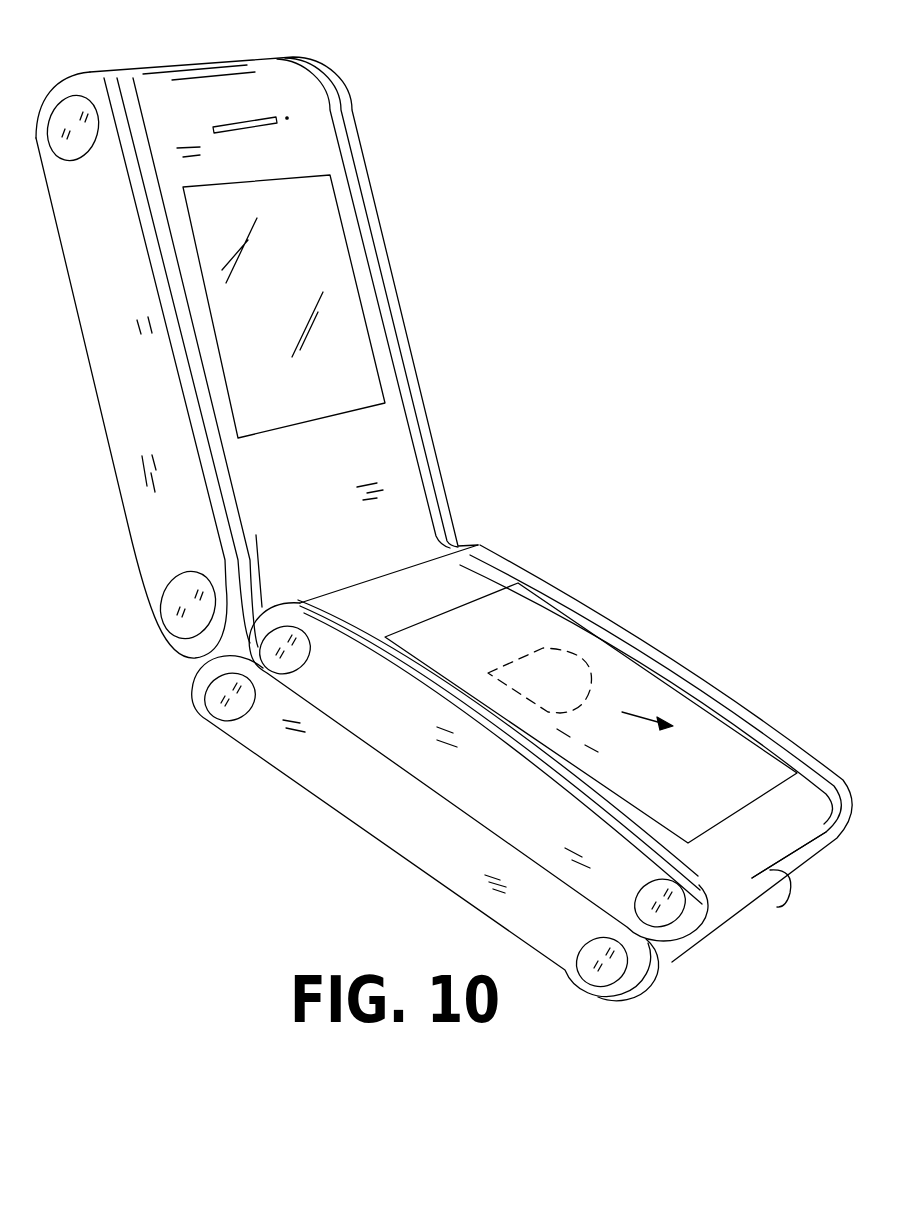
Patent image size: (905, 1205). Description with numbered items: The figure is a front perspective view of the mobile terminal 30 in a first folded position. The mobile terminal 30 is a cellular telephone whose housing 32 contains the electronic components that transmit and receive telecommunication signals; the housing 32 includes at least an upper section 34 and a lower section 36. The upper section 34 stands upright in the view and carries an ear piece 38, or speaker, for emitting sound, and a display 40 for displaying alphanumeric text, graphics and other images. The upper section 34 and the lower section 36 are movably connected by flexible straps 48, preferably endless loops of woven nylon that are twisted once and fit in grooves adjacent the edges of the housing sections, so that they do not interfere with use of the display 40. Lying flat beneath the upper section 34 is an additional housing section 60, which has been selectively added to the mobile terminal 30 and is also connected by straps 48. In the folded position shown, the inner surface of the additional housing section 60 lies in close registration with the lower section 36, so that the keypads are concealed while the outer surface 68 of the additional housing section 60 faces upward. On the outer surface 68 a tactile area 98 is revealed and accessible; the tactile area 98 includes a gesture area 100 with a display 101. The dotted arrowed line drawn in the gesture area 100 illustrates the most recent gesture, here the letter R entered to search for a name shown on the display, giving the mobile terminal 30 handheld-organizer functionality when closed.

The mobile terminal 30 is at (520, 381).
The housing 32 is at (122, 503).
The upper section 34 is at (325, 148).
The lower section 36 is at (307, 773).
The ear piece 38 is at (252, 127).
The display 40 is at (330, 399).
The straps 48 is at (160, 229).
The additional housing section 60 is at (612, 619).
The outer surface 68 is at (483, 572).
The tactile area 98 is at (358, 618).
The gesture area 100 is at (458, 665).
The display 101 is at (720, 788).